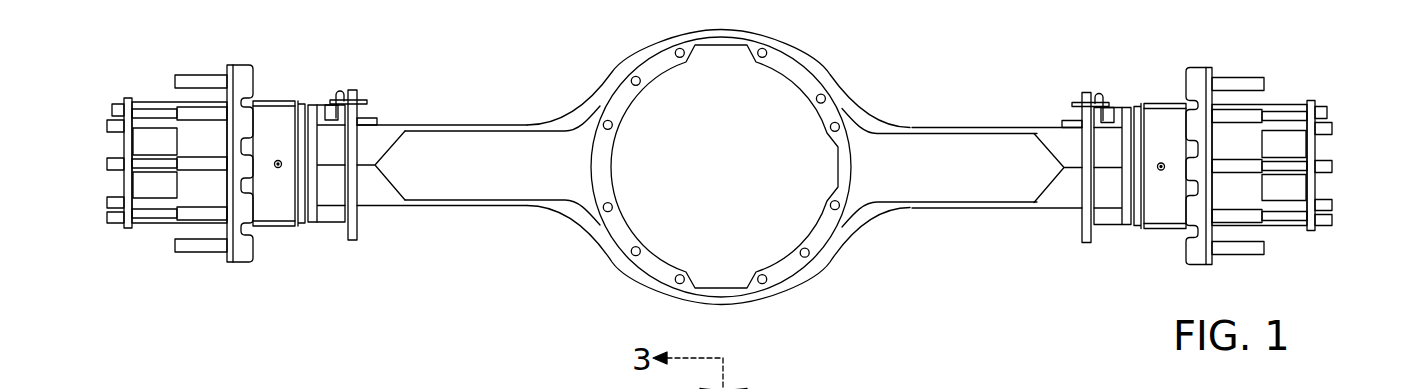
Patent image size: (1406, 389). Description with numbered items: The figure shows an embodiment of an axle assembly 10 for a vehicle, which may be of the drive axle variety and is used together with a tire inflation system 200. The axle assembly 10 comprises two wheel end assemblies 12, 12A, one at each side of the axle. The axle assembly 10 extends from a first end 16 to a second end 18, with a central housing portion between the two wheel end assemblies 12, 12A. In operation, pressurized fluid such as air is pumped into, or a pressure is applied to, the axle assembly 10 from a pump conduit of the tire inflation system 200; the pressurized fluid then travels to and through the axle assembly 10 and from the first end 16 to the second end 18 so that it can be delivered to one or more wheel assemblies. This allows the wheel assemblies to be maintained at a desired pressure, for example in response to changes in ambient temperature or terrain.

The axle assembly 10 is at (942, 77).
The wheel end assembly 12 is at (207, 149).
The wheel end assembly 12A is at (1159, 142).
The first end 16 is at (97, 154).
The second end 18 is at (1342, 160).
The tire inflation system 200 is at (413, 75).